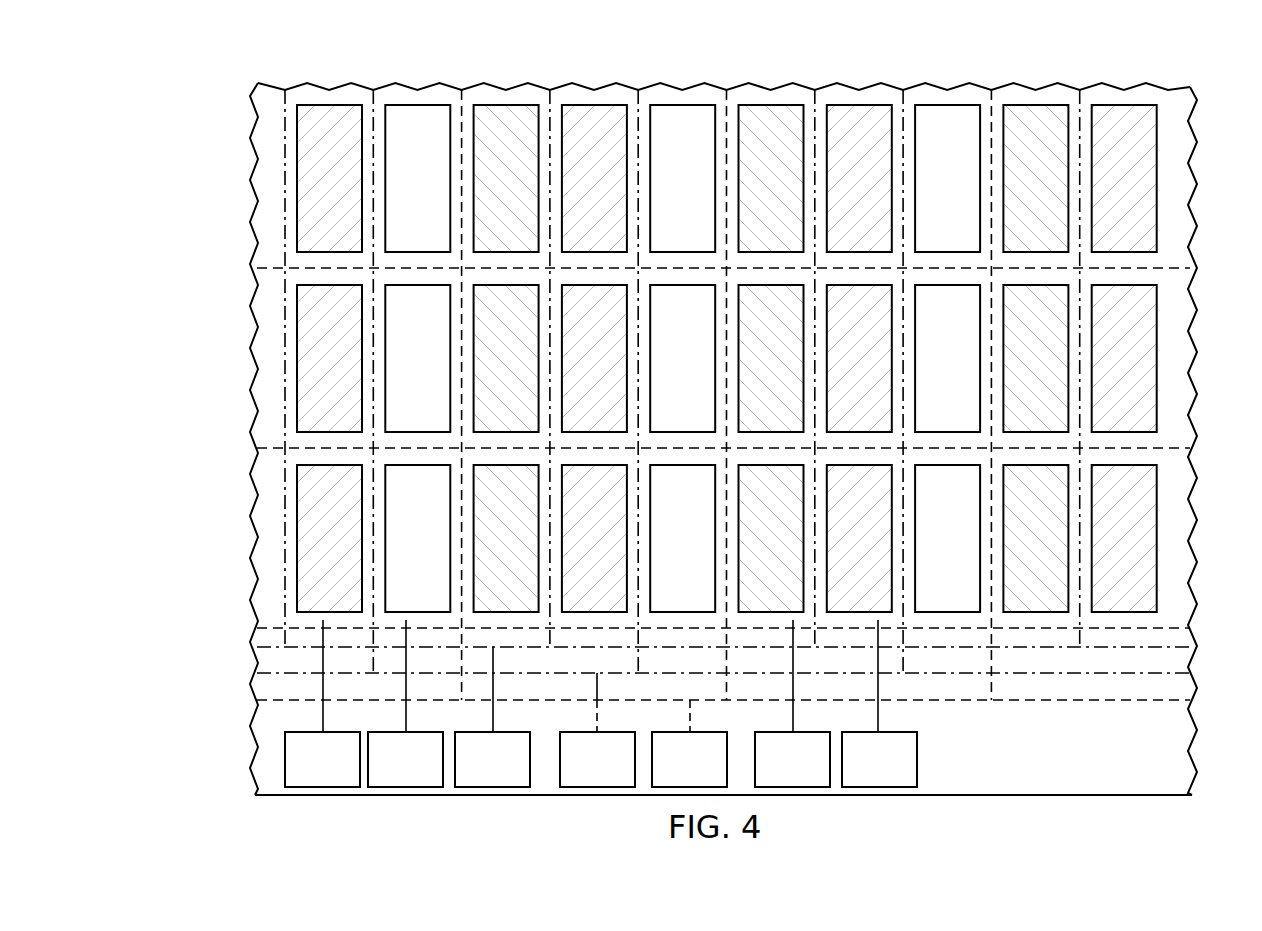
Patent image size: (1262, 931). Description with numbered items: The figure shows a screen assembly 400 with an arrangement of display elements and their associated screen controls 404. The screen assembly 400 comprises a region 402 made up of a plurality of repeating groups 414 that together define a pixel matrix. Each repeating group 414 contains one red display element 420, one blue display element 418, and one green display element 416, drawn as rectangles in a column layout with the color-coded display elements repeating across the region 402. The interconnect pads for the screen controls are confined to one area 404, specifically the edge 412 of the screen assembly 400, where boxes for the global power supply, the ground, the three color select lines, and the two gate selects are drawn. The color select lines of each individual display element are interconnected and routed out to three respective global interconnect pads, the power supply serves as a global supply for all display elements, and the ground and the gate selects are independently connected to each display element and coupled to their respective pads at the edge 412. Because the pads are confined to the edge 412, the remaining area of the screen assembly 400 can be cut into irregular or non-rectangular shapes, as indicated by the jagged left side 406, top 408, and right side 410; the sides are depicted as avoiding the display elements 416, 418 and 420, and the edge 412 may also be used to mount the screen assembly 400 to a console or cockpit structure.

The screen assembly 400 is at (258, 183).
The region 402 is at (178, 86).
The area for screen controls 404 is at (250, 632).
The left side 406 is at (255, 498).
The top 408 is at (505, 88).
The right side 410 is at (1196, 532).
The edge 412 is at (1070, 797).
The repeating group 414 is at (813, 82).
The green display element 416 is at (791, 191).
The blue display element 418 is at (703, 191).
The red display element 420 is at (614, 191).